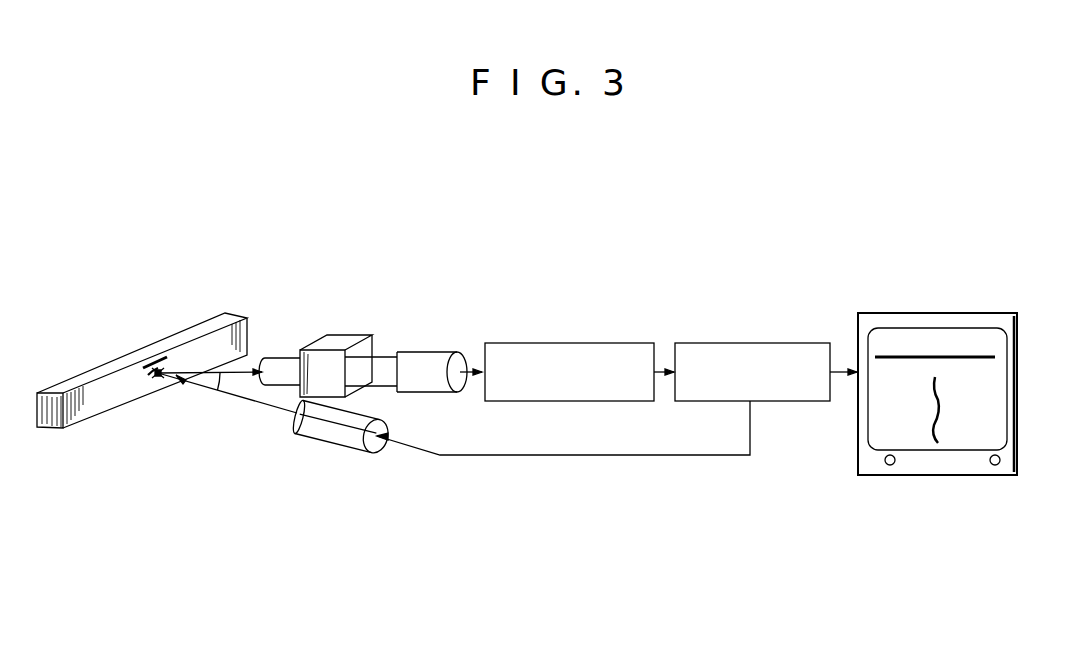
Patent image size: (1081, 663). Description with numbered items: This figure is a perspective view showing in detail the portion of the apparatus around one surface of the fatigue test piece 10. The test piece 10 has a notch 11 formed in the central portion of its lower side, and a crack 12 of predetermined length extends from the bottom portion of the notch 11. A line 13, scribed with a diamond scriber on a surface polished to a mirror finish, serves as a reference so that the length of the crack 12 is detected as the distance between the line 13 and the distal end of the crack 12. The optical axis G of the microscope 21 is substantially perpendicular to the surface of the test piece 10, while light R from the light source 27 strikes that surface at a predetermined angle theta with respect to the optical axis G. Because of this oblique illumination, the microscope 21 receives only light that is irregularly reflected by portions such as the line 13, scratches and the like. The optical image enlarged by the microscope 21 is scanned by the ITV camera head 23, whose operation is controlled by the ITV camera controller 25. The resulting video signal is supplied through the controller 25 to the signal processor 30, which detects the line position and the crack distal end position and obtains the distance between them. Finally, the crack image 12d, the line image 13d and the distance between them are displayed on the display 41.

The fatigue test piece 10 is at (110, 360).
The notch 11 is at (158, 378).
The crack 12 is at (163, 367).
The line 13 is at (157, 360).
The optical axis G is at (243, 371).
The light R is at (240, 397).
The microscope 21 is at (340, 338).
The ITV camera head 23 is at (422, 354).
The ITV camera controller 25 is at (558, 343).
The light source 27 is at (322, 443).
The signal processor 30 is at (733, 343).
The display 41 is at (998, 378).
The line image 13d is at (918, 354).
The crack image 12d is at (933, 438).